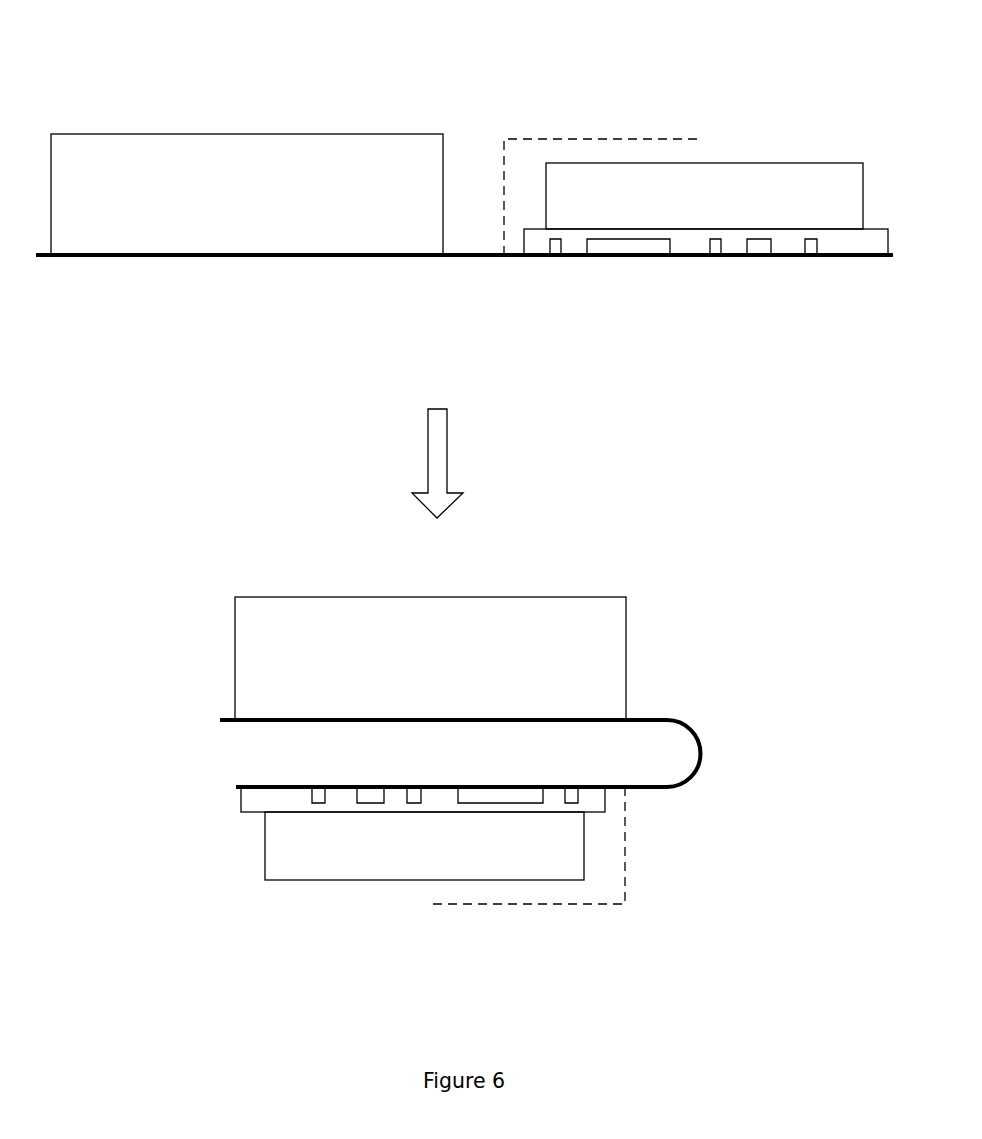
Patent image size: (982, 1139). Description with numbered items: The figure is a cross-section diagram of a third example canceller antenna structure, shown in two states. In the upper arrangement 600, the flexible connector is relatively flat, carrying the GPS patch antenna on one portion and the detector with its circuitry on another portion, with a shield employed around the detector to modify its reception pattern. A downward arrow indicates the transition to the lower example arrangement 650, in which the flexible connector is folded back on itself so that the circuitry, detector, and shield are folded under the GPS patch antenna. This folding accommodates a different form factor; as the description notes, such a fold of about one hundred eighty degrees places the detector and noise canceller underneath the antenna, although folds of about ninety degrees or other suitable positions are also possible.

The unfolded antenna assembly 600 is at (140, 24).
The folded antenna assembly 650 is at (162, 592).